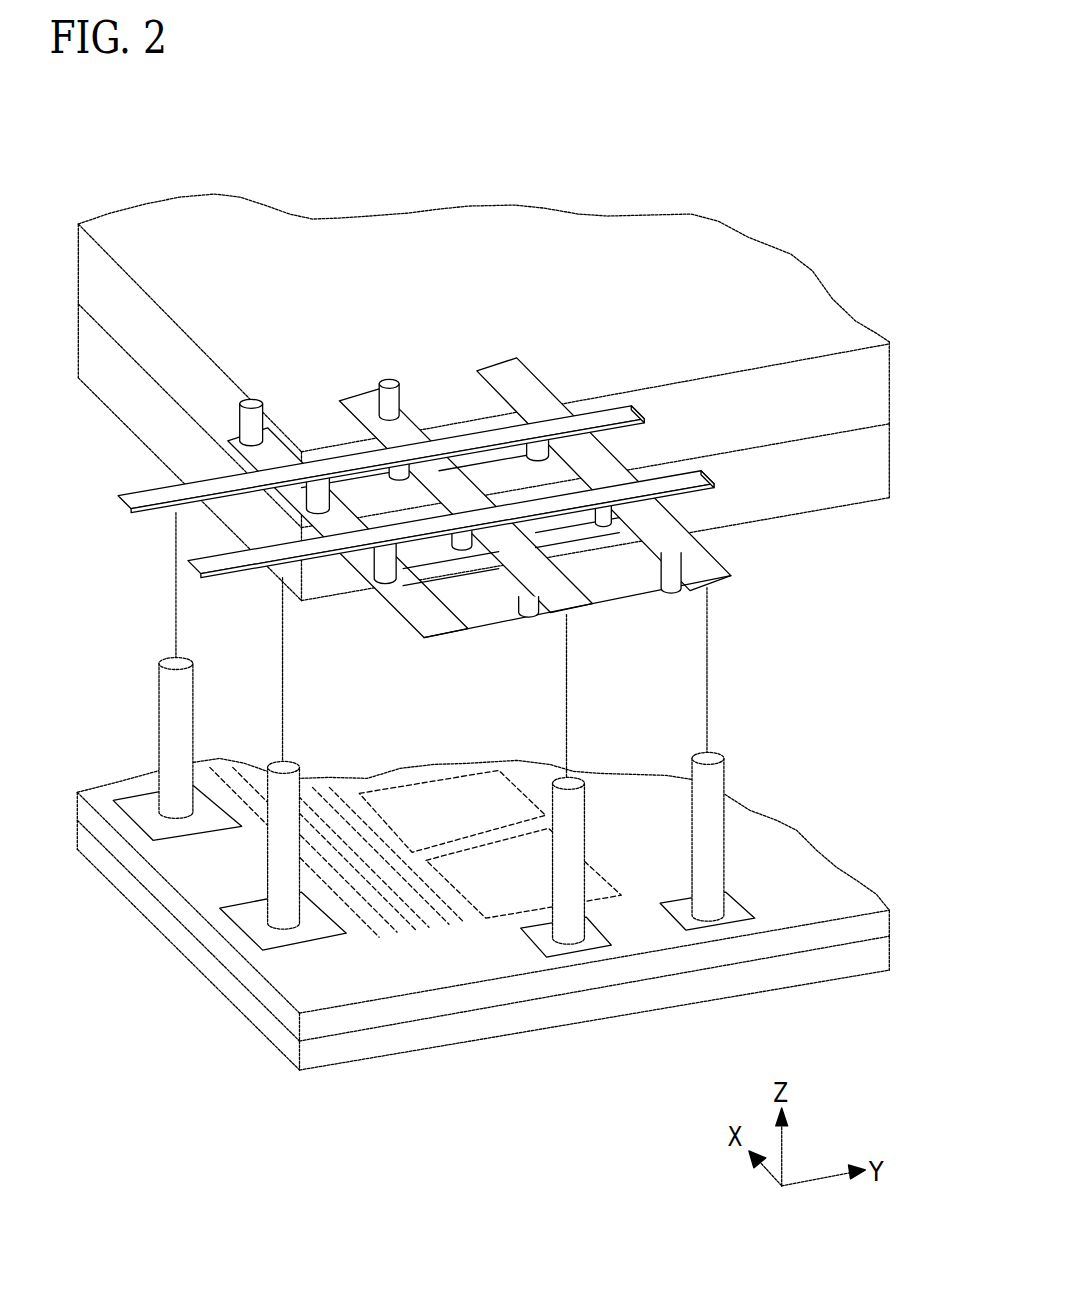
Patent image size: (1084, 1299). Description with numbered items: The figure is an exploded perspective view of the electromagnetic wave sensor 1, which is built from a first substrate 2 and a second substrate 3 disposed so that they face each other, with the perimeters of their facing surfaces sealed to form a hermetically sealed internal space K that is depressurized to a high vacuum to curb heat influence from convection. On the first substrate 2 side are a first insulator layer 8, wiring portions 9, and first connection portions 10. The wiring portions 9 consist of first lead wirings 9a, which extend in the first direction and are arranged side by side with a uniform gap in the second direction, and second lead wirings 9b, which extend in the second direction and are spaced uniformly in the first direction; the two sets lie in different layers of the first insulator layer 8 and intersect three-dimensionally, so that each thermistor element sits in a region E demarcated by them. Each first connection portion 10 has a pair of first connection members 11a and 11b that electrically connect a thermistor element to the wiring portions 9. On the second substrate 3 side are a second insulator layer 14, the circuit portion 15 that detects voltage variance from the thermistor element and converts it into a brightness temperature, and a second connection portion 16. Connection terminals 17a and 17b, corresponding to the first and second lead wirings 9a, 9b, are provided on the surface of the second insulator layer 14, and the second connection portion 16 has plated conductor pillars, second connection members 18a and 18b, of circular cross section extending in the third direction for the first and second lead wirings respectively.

The electromagnetic wave sensor 1 is at (176, 146).
The first substrate 2 is at (870, 385).
The first insulator layer 8 is at (875, 463).
The wiring portions 9 is at (440, 545).
The first lead wirings 9a is at (572, 602).
The second lead wirings 9b is at (130, 510).
The first connection portions 10 is at (460, 555).
The first connection member 11a is at (530, 600).
The first connection member 11b is at (386, 577).
The region E is at (470, 612).
The internal space K is at (790, 718).
The second substrate 3 is at (872, 957).
The second insulator layer 14 is at (872, 912).
The circuit portion 15 is at (483, 938).
The second connection portion 16 is at (430, 756).
The connection terminals 17a is at (558, 948).
The connection terminals 17b is at (137, 822).
The second connection member 18a is at (574, 825).
The second connection member 18b is at (172, 710).